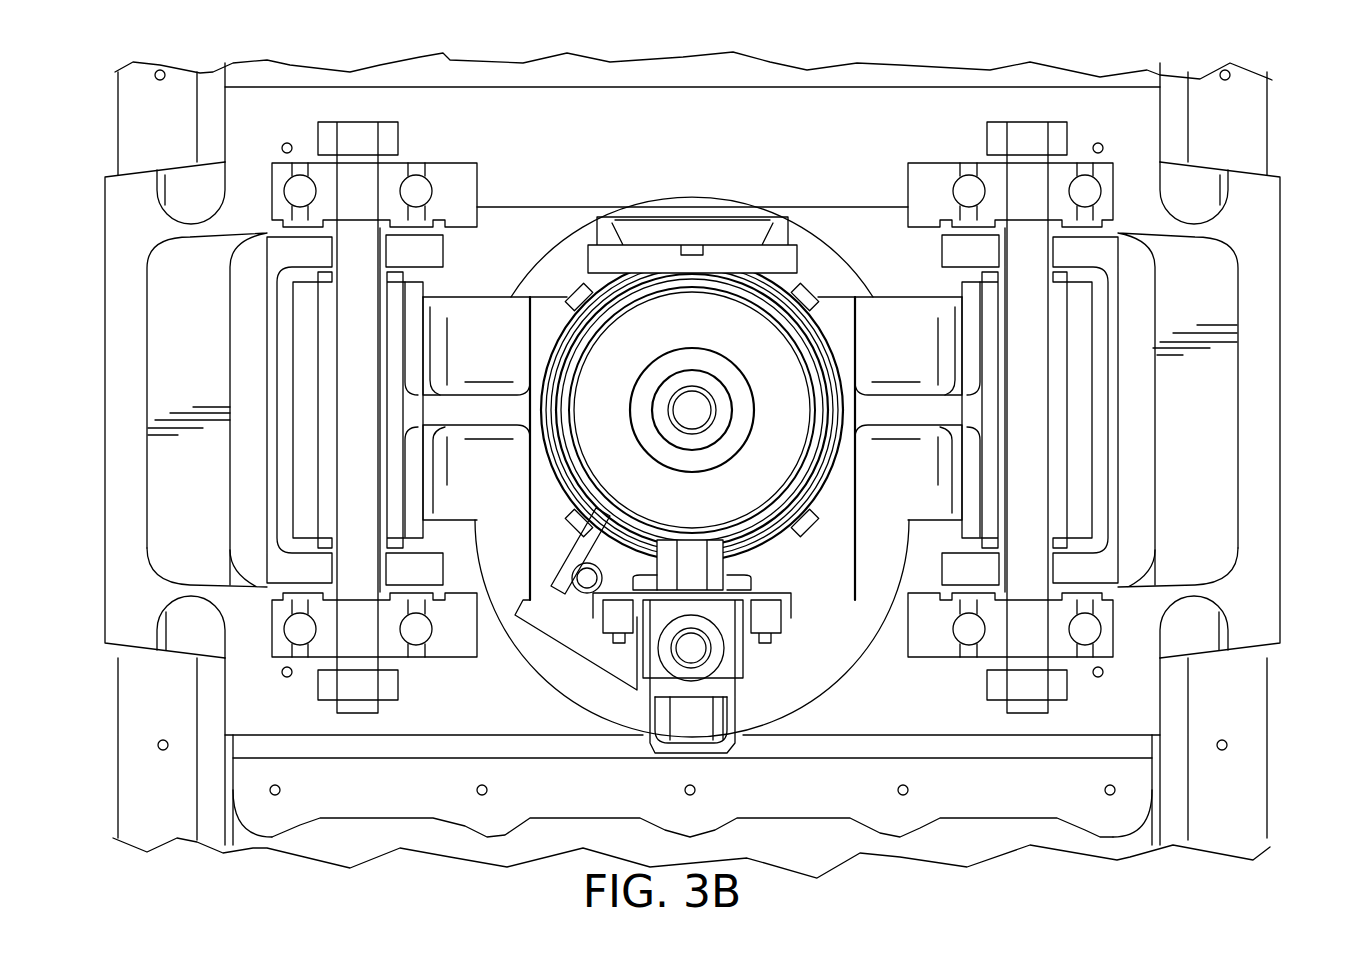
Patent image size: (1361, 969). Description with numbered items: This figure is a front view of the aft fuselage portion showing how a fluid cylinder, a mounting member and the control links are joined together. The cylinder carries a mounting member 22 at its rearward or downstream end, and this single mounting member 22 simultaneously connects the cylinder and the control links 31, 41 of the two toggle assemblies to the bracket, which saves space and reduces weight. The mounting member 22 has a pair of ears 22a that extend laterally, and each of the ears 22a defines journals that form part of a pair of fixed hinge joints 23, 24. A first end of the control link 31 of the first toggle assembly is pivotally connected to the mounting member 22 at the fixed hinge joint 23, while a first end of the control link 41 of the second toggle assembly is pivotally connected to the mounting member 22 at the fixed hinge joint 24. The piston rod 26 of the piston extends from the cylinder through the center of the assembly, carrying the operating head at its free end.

The mounting member 22 is at (893, 318).
The ears 22a is at (420, 408).
The fixed hinge joint 23 is at (360, 187).
The fixed hinge joint 24 is at (1030, 175).
The piston rod 26 is at (722, 320).
The control link 31 is at (115, 195).
The control link 41 is at (1245, 190).